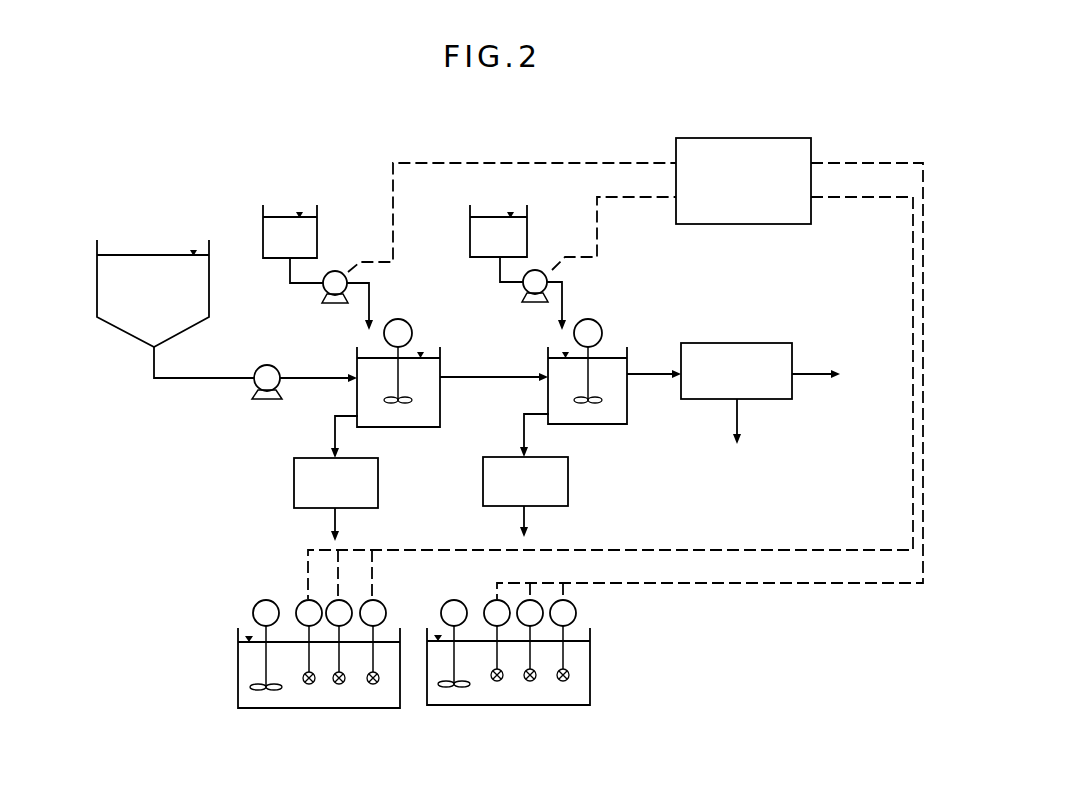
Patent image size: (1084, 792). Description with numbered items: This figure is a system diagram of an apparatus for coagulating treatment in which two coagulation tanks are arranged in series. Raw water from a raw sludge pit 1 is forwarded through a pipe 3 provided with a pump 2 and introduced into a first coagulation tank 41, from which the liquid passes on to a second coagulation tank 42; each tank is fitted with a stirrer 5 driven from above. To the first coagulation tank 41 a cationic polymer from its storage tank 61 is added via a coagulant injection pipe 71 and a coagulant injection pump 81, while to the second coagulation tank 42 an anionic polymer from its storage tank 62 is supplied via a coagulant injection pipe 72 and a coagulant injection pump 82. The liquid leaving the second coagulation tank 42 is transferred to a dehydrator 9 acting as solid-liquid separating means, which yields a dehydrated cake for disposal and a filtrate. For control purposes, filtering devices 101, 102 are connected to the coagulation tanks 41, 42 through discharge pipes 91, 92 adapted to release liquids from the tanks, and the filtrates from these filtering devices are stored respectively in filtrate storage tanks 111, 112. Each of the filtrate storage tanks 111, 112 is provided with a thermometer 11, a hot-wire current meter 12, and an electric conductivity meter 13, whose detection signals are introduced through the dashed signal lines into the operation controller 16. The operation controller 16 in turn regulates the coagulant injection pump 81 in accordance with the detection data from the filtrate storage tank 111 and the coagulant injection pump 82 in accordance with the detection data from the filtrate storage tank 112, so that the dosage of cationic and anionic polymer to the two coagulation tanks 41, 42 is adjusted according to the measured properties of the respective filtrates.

The raw sludge pit 1 is at (97, 290).
The pump 2 is at (262, 366).
The pipe 3 is at (313, 376).
The stirrer 5 is at (398, 319).
The dehydrator 9 is at (737, 343).
The thermometer 11 is at (403, 642).
The hot-wire current meter 12 is at (434, 642).
The electric conductivity meter 13 is at (468, 642).
The operation controller 16 is at (758, 138).
The first coagulation tank 41 is at (440, 390).
The second coagulation tank 42 is at (627, 395).
The storage tank 61 is at (263, 237).
The storage tank 62 is at (470, 237).
The coagulant injection pipe 71 is at (290, 270).
The coagulant injection pipe 72 is at (500, 270).
The coagulant injection pump 81 is at (328, 302).
The coagulant injection pump 82 is at (528, 300).
The discharge pipe 91 is at (335, 431).
The discharge pipe 92 is at (524, 431).
The filtering device 101 is at (294, 485).
The filtering device 102 is at (483, 485).
The filtrate storage tank 111 is at (263, 708).
The filtrate storage tank 112 is at (472, 705).